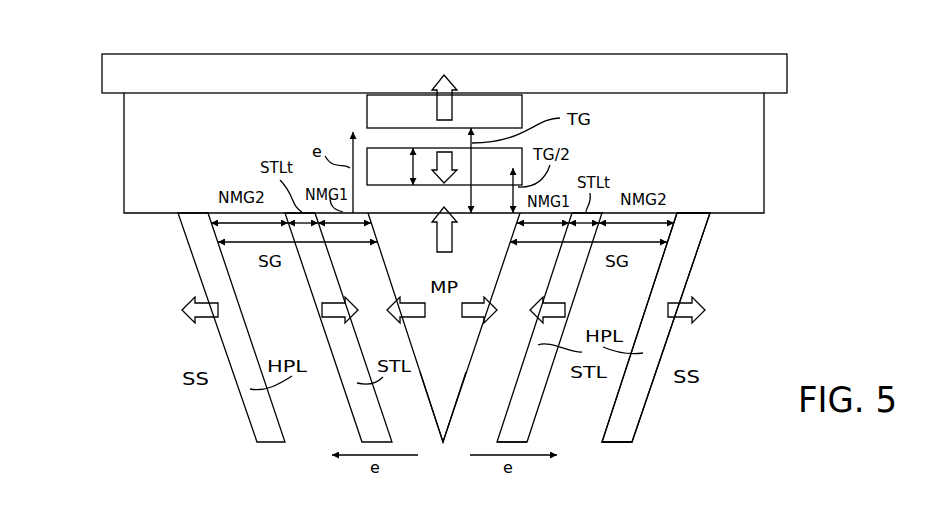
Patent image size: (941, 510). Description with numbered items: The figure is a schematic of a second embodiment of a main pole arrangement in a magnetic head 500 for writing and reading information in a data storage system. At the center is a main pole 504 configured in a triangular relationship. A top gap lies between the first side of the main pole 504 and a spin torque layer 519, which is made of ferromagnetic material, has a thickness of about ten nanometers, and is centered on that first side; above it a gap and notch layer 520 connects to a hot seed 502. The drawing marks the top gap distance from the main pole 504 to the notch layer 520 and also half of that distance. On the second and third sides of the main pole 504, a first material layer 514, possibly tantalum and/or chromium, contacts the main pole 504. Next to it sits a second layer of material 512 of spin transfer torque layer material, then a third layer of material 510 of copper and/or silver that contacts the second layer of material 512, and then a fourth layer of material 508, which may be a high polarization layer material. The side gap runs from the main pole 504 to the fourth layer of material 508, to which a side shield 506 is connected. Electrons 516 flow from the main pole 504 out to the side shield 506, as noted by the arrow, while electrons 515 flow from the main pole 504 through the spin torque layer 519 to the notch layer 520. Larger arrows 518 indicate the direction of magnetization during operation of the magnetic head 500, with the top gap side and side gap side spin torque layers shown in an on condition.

The magnetic head 500 is at (868, 121).
The hot seed 502 is at (770, 70).
The main pole 504 is at (390, 228).
The side shield 506 is at (158, 350).
The fourth layer of material 508 is at (680, 252).
The third layer of material 510 is at (582, 440).
The second layer of material 512 is at (535, 383).
The first material layer 514 is at (463, 430).
The electrons 515 is at (348, 145).
The electrons 516 is at (355, 457).
The larger arrows 518 is at (397, 307).
The spin torque layer 519 is at (423, 158).
The gap and notch layer 520 is at (382, 107).